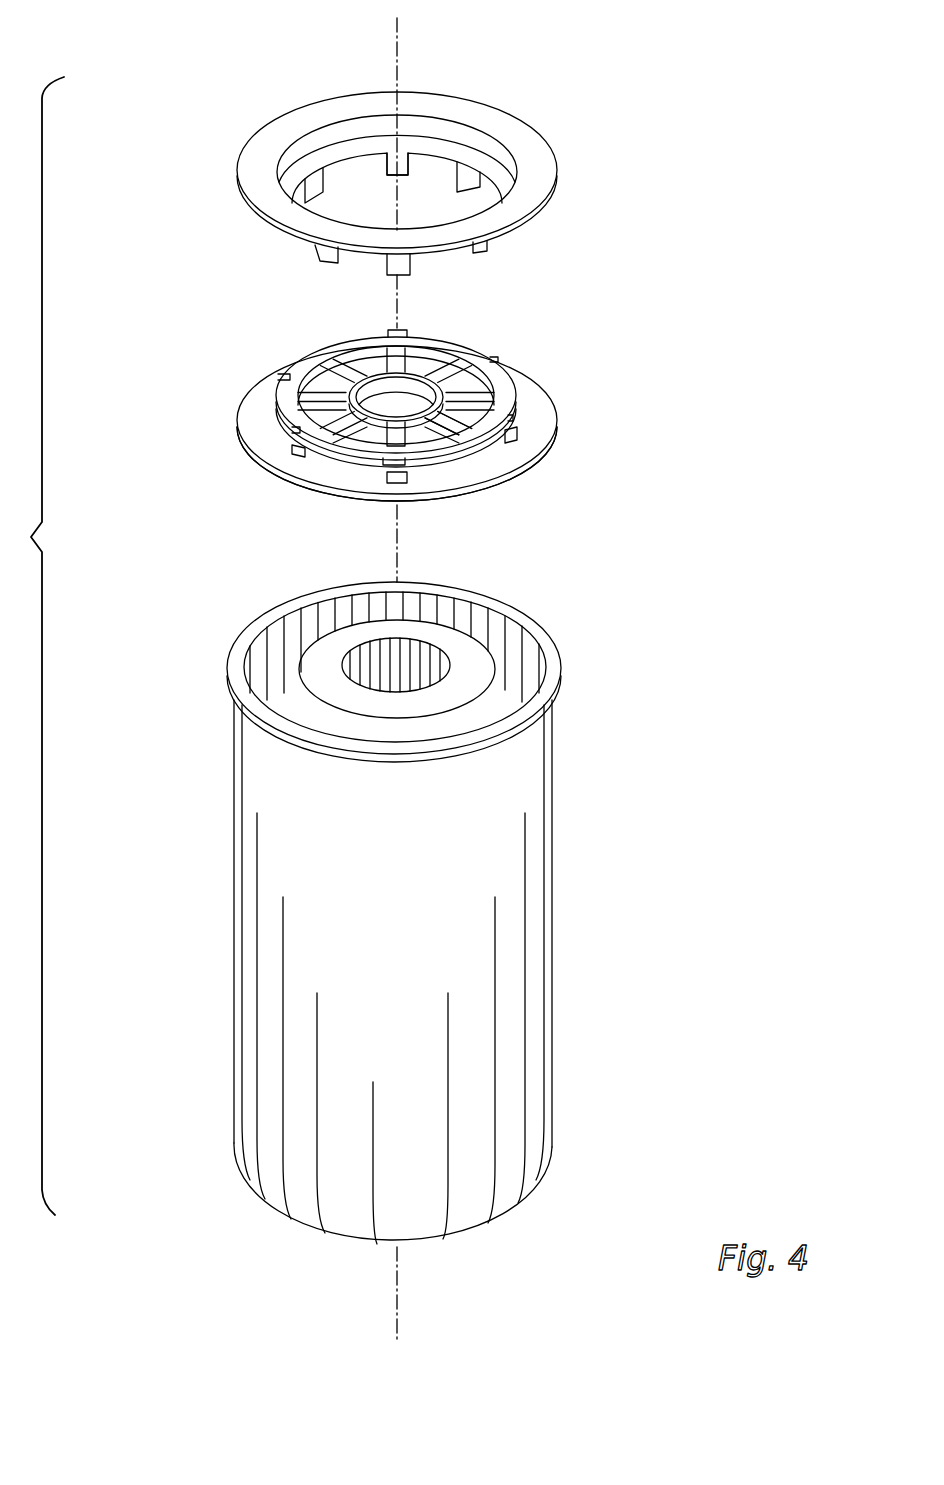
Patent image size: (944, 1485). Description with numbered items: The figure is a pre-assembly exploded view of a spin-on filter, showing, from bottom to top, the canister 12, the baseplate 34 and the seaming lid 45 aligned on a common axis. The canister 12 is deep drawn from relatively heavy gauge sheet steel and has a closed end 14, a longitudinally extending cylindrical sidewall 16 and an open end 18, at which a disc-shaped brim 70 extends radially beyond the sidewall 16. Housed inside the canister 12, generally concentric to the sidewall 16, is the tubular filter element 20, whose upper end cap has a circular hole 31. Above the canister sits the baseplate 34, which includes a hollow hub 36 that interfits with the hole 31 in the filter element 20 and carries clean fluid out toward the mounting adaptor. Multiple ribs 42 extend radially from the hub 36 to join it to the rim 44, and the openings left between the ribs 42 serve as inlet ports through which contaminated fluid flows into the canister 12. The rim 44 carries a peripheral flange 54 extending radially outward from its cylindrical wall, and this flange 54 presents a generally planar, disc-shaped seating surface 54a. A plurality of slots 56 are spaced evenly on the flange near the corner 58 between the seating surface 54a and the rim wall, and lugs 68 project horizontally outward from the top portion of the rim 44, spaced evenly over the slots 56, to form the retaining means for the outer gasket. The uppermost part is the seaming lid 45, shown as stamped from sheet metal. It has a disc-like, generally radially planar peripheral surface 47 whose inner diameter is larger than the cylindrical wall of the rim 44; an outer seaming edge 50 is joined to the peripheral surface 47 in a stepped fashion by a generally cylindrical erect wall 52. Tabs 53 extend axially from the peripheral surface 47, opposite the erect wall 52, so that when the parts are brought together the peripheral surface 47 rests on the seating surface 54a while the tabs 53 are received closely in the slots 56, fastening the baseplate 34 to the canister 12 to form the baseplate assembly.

The canister 12 is at (456, 952).
The closed end 14 is at (264, 1205).
The cylindrical sidewall 16 is at (234, 927).
The open end 18 is at (446, 661).
The filter element 20 is at (483, 707).
The circular hole 31 is at (377, 675).
The baseplate 34 is at (386, 420).
The hub 36 is at (388, 383).
The ribs 42 is at (487, 388).
The rim 44 is at (448, 443).
The seaming lid 45 is at (393, 158).
The peripheral surface 47 is at (403, 147).
The outer seaming edge 50 is at (537, 143).
The erect wall 52 is at (373, 128).
The tabs 53 is at (404, 266).
The peripheral flange 54 is at (280, 461).
The seating surface 54a is at (427, 488).
The slots 56 is at (518, 413).
The corner 58 is at (353, 473).
The lugs 68 is at (497, 355).
The brim 70 is at (554, 663).